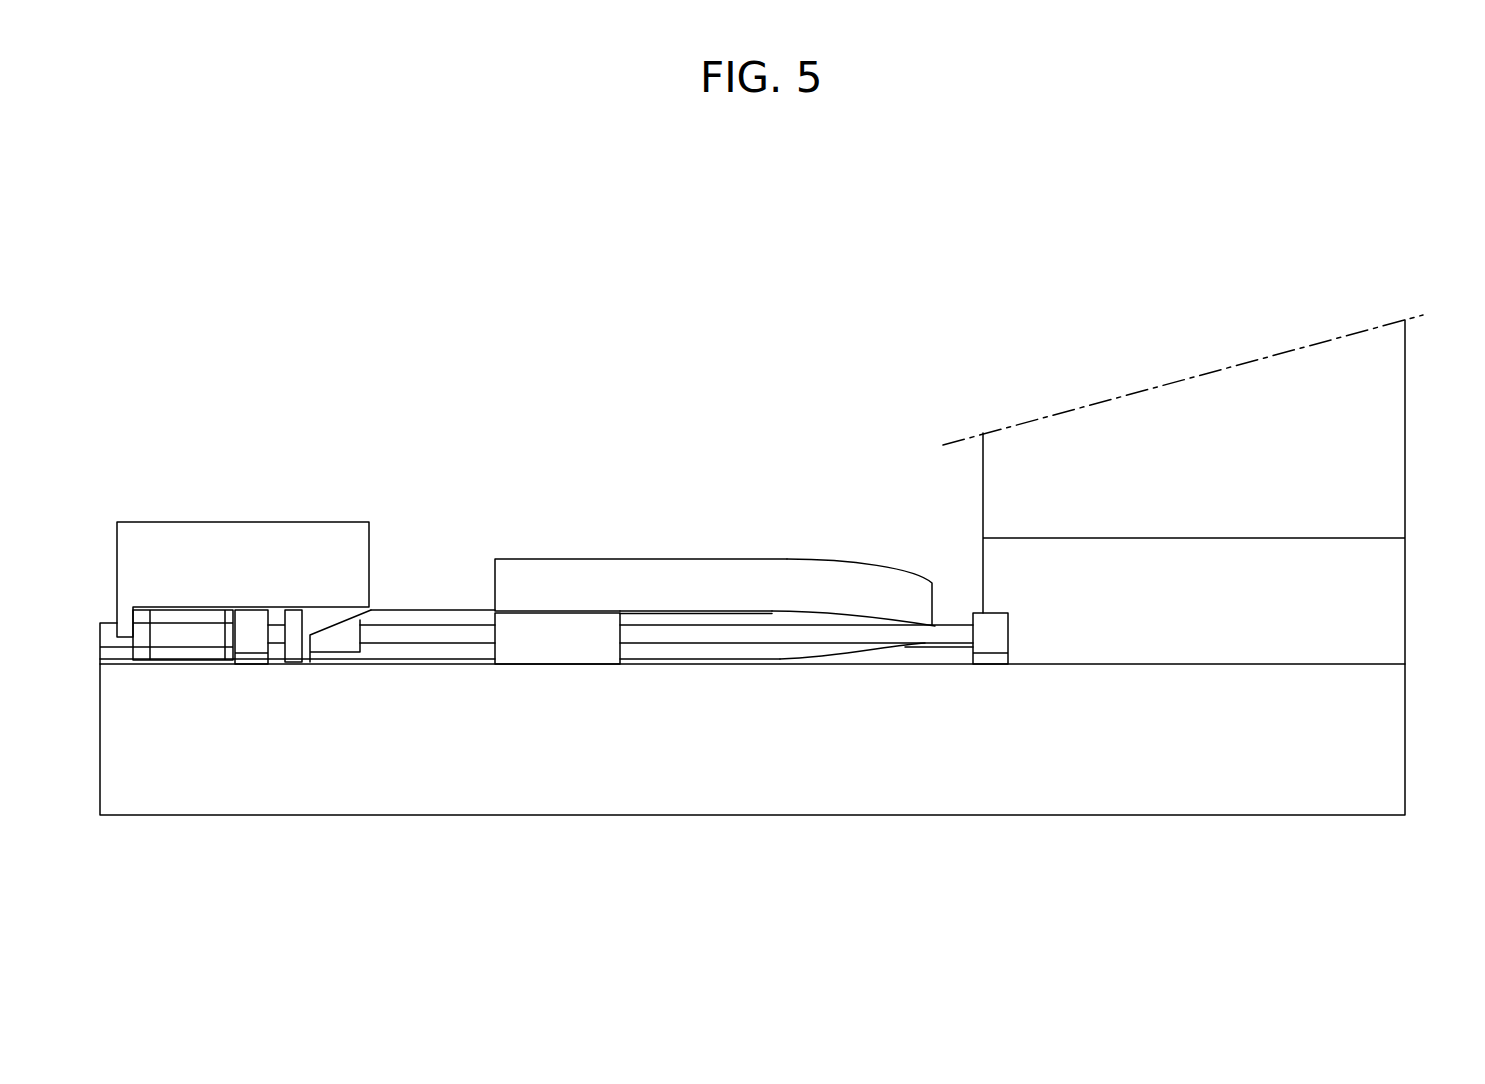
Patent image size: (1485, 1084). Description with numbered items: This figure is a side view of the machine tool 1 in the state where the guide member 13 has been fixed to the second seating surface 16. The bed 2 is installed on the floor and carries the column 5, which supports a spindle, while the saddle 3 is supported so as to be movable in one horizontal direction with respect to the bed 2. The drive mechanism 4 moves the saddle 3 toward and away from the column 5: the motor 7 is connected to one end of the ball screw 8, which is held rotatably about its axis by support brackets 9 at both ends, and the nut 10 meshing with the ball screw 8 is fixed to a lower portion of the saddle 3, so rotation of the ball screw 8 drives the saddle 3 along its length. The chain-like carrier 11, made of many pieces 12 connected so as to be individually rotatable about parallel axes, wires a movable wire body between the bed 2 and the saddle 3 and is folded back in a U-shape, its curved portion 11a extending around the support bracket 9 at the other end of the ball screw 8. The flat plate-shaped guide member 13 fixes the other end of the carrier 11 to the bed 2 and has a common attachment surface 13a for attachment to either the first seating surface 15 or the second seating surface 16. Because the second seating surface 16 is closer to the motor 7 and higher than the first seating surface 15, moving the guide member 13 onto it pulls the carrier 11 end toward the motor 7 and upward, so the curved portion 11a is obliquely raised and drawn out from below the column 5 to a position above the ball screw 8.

The machine tool 1 is at (413, 241).
The bed 2 is at (1412, 747).
The saddle 3 is at (187, 509).
The drive mechanism 4 is at (456, 541).
The column 5 is at (1404, 428).
The motor 7 is at (185, 653).
The ball screw 8 is at (430, 640).
The support bracket 9 is at (248, 623).
The nut 10 is at (333, 650).
The carrier 11 is at (726, 531).
The curved portion 11a is at (927, 602).
The piece 12 is at (664, 558).
The guide member 13 is at (698, 626).
The common attachment surface 13a is at (747, 615).
The first seating surface 15 is at (863, 664).
The second seating surface 16 is at (558, 612).